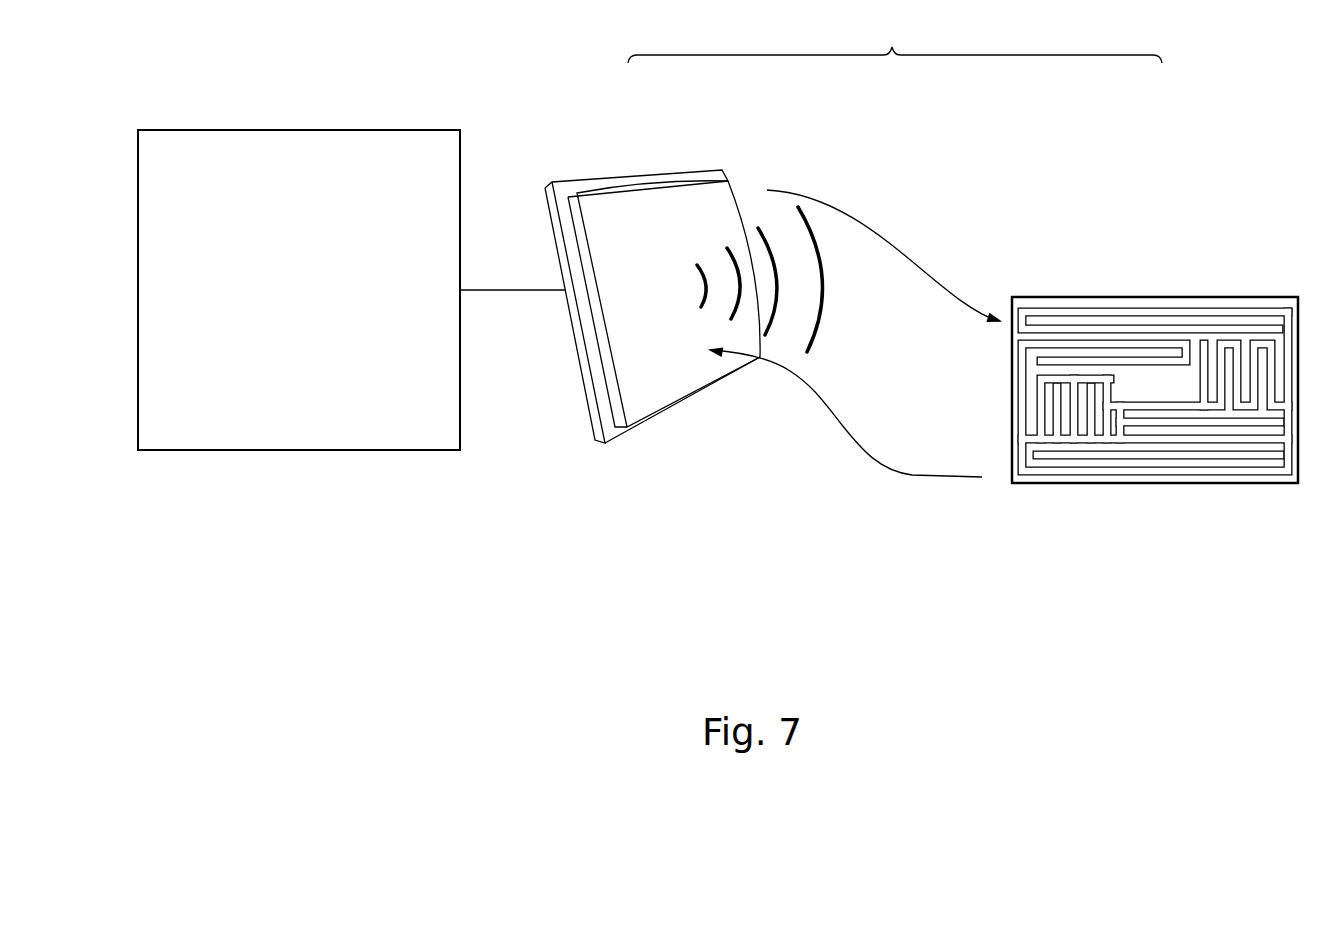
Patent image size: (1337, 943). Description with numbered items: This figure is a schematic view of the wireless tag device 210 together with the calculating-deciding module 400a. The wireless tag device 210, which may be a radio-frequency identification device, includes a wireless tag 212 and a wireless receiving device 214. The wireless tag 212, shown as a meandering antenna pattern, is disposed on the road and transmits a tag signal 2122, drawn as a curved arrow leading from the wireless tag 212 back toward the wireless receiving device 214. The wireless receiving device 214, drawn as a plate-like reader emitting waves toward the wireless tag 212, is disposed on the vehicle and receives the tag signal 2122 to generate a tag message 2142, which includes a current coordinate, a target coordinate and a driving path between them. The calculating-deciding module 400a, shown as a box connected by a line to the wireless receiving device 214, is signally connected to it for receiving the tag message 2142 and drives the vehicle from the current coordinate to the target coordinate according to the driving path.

The calculating-deciding module 400a is at (302, 129).
The wireless tag device 210 is at (895, 35).
The wireless receiving device 214 is at (673, 172).
The tag message 2142 is at (508, 290).
The wireless tag 212 is at (1156, 297).
The tag signal 2122 is at (912, 477).